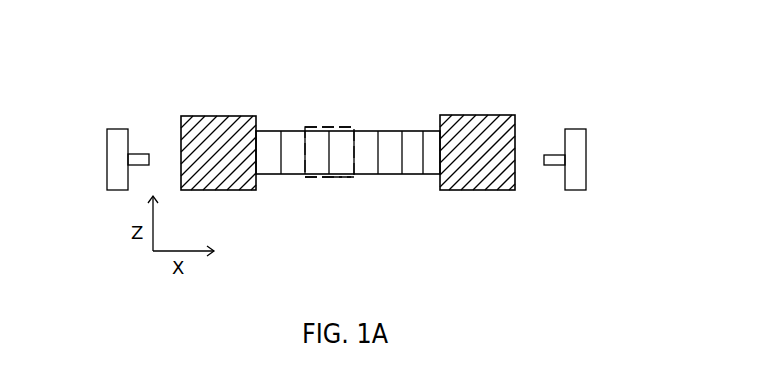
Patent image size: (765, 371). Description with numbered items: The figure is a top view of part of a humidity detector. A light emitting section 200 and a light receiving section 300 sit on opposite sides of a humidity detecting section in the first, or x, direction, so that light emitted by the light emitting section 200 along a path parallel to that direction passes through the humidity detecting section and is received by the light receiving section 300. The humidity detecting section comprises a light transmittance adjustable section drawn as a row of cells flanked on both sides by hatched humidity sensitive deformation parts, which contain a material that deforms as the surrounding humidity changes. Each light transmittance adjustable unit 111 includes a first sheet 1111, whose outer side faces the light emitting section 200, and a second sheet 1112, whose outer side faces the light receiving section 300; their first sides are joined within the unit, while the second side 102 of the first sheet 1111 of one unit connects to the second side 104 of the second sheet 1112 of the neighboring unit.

The light emitting section 200 is at (98, 147).
The light receiving section 300 is at (595, 142).
The light transmittance adjustable unit 111 is at (309, 121).
The first sheet 1111 is at (275, 132).
The second sheet 1112 is at (383, 137).
The second side of first sheet 102 is at (281, 196).
The second side of second sheet 104 is at (332, 196).